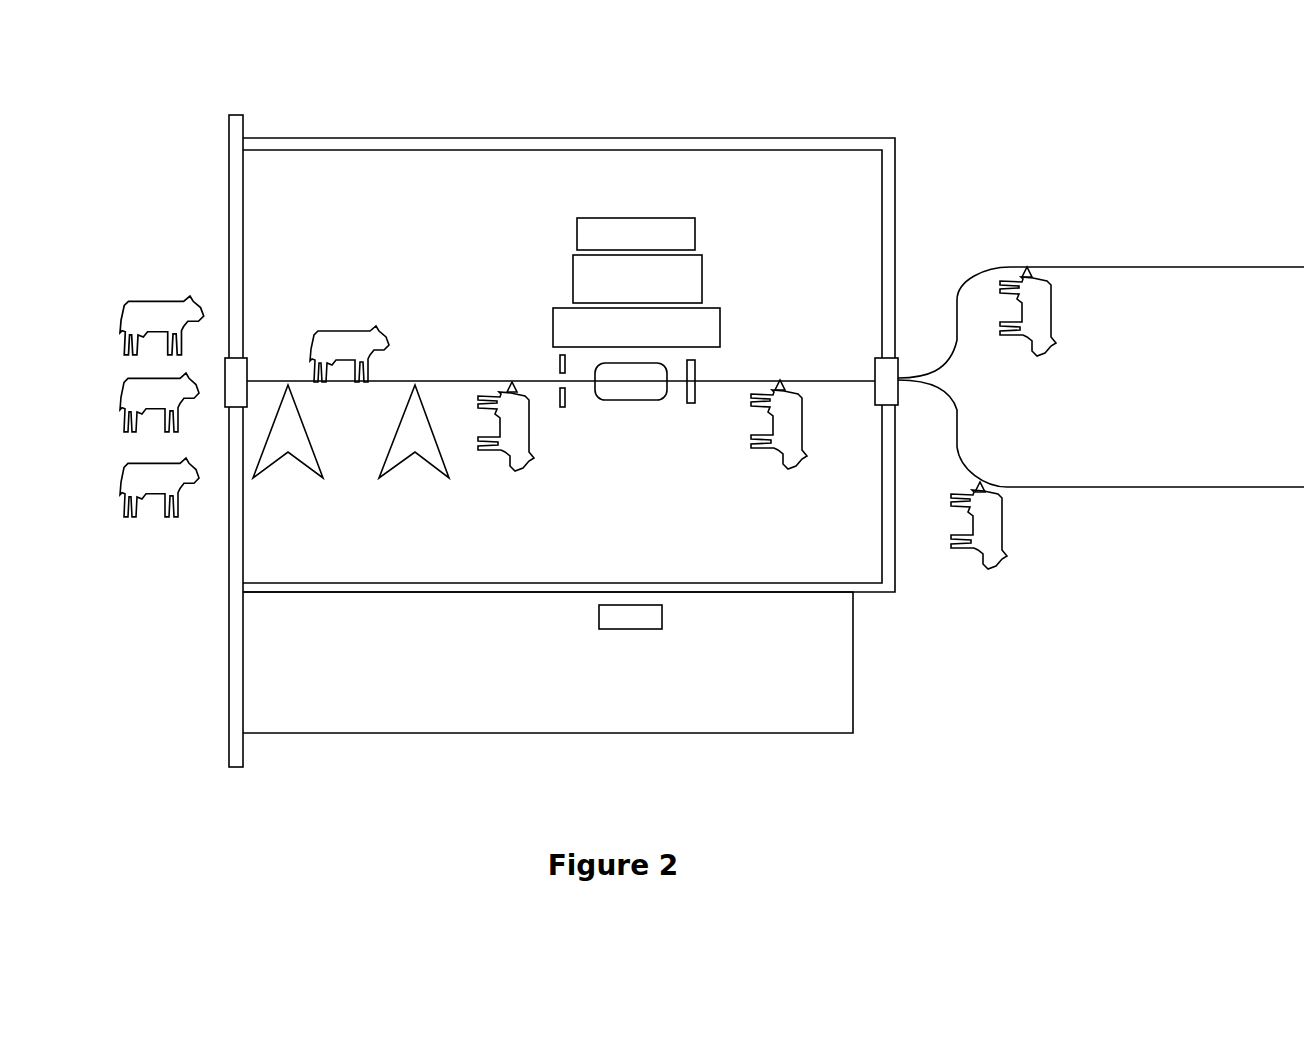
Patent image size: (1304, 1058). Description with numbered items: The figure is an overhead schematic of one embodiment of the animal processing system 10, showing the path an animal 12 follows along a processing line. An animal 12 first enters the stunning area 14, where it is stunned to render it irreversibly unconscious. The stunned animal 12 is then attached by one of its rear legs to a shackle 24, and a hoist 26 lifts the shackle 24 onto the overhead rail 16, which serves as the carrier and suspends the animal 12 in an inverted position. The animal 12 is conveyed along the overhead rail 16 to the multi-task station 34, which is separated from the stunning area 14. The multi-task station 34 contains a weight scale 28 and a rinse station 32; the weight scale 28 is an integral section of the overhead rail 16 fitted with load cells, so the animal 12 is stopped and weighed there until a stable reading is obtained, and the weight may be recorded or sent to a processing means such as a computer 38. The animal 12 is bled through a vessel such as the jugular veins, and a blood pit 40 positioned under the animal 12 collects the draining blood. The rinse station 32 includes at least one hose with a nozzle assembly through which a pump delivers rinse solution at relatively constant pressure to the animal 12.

The animal processing system 10 is at (910, 603).
The animal 12 is at (157, 313).
The stunning area 14 is at (288, 366).
The overhead rail 16 is at (397, 380).
The shackle 24 is at (510, 378).
The hoist 26 is at (449, 476).
The weight scale 28 is at (693, 332).
The rinse station 32 is at (628, 382).
The multi-task station 34 is at (633, 197).
The controller 38 is at (650, 620).
The blood pit 40 is at (655, 418).